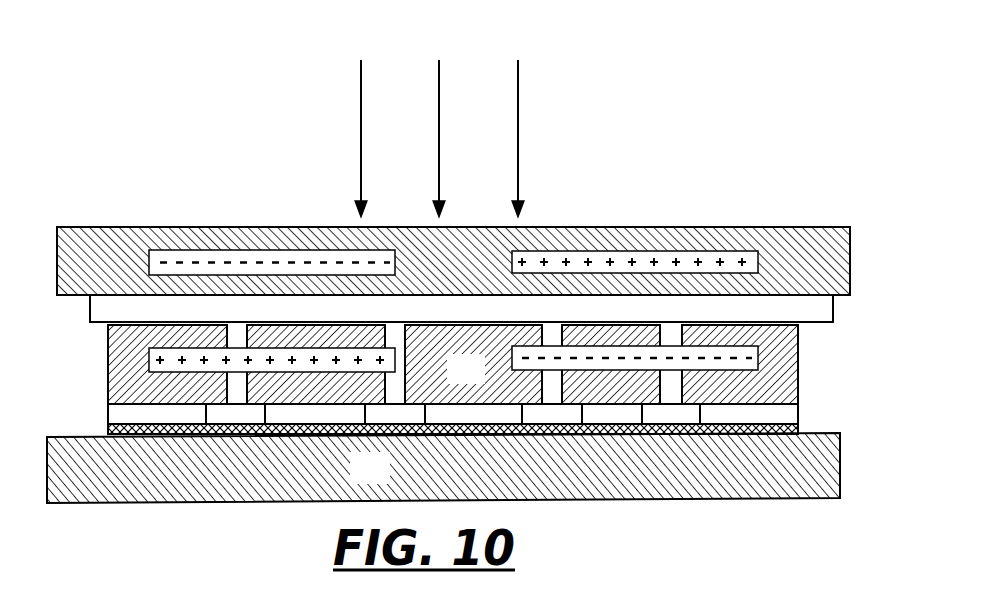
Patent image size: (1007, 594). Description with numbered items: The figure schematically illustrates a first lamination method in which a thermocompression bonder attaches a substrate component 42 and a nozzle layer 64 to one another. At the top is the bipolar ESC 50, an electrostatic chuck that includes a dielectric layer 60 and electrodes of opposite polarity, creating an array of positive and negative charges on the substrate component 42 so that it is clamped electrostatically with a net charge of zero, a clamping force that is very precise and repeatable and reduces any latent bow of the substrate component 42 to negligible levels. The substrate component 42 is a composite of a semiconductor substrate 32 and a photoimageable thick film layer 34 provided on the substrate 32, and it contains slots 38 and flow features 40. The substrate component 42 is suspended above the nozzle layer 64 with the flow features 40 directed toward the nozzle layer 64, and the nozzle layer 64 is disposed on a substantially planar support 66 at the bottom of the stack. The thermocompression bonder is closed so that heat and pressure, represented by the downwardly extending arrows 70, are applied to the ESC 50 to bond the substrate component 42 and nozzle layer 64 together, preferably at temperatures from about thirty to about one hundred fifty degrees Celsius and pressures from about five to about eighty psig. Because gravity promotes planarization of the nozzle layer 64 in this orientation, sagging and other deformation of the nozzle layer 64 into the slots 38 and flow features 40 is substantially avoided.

The downwardly extending arrows 70 is at (338, 126).
The ESC 50 is at (821, 206).
The dielectric layer 60 is at (484, 320).
The substrate component 42 is at (448, 359).
The substrate 32 is at (480, 380).
The flow features 40 is at (571, 388).
The slots 38 is at (685, 386).
The thick film layer 34 is at (757, 410).
The nozzle layer 64 is at (802, 423).
The support 66 is at (384, 480).